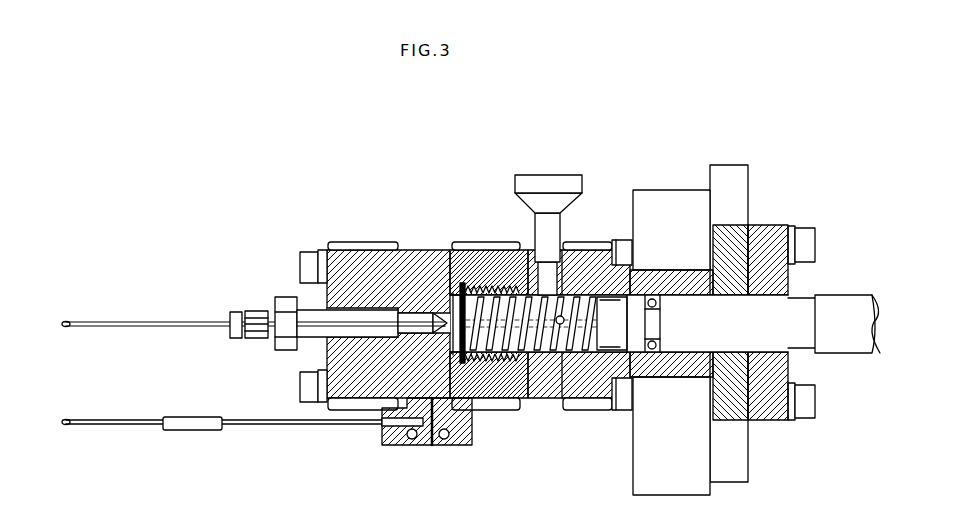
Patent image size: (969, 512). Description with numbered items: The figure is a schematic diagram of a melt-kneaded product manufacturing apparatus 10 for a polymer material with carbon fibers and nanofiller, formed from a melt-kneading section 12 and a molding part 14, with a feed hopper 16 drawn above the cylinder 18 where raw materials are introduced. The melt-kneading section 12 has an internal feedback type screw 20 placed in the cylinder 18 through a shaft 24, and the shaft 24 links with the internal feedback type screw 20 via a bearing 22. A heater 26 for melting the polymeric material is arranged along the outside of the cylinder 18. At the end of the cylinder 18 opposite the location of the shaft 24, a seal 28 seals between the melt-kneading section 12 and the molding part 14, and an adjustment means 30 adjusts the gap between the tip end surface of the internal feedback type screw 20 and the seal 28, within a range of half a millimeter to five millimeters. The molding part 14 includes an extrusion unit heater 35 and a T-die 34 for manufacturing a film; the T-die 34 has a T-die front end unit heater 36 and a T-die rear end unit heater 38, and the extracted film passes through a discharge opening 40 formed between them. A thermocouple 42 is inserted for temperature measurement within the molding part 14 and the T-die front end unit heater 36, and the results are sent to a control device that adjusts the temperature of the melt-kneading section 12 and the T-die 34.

The melt-kneaded product manufacturing apparatus 10 is at (426, 168).
The melt-kneading section 12 is at (629, 166).
The molding part 14 is at (288, 226).
The hopper 16 is at (548, 182).
The cylinder 18 is at (590, 386).
The internal feedback type screw 20 is at (526, 342).
The bearing 22 is at (651, 354).
The shaft 24 is at (845, 300).
The heater 26 is at (490, 403).
The seal 28 is at (446, 320).
The adjustment means 30 is at (481, 252).
The T-die 34 is at (471, 441).
The extrusion unit heater 35 is at (340, 412).
The T-die front end unit heater 36 is at (412, 440).
The T-die rear end unit heater 38 is at (446, 440).
The discharge opening 40 is at (432, 446).
The thermocouple 42 is at (168, 320).